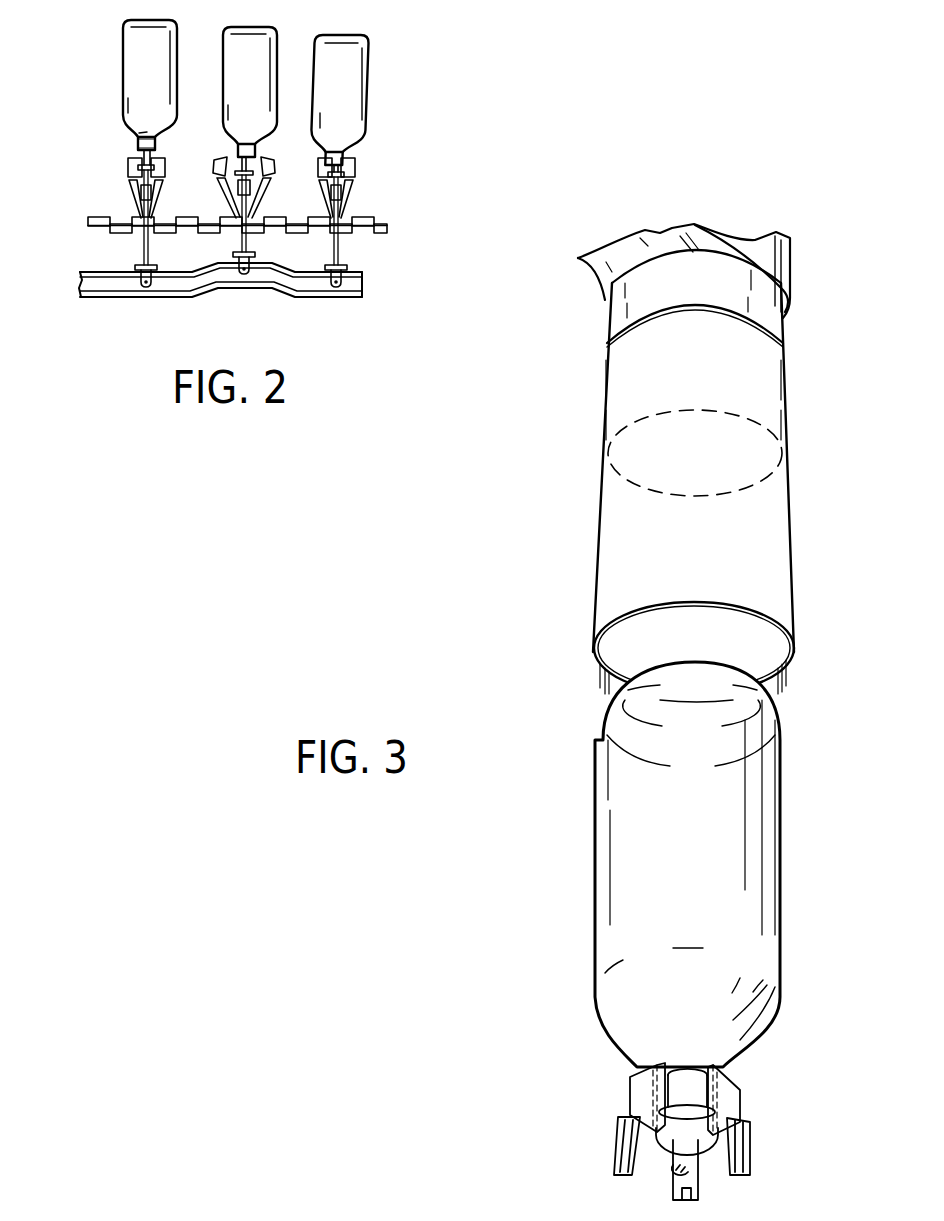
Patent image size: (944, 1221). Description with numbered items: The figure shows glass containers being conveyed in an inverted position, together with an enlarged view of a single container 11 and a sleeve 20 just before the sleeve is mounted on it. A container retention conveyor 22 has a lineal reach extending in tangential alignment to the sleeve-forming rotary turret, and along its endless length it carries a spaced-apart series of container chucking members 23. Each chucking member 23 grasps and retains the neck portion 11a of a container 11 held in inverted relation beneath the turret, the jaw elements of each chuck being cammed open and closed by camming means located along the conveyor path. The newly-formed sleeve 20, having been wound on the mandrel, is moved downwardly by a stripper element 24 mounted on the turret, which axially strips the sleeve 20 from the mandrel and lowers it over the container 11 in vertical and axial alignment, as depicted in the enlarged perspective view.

In FIG. 2, the container 11 is at (368, 83).
In FIG. 3, the container 11 is at (780, 863).
In FIG. 2, the neck portion 11a is at (137, 143).
In FIG. 3, the neck portion 11a is at (680, 1088).
In FIG. 3, the sleeve 20 is at (791, 508).
In FIG. 2, the container retention conveyor 22 is at (313, 307).
In FIG. 2, the container chucking member 23 is at (125, 168).
In FIG. 3, the container chucking member 23 is at (752, 1105).
In FIG. 3, the stripper element 24 is at (784, 321).